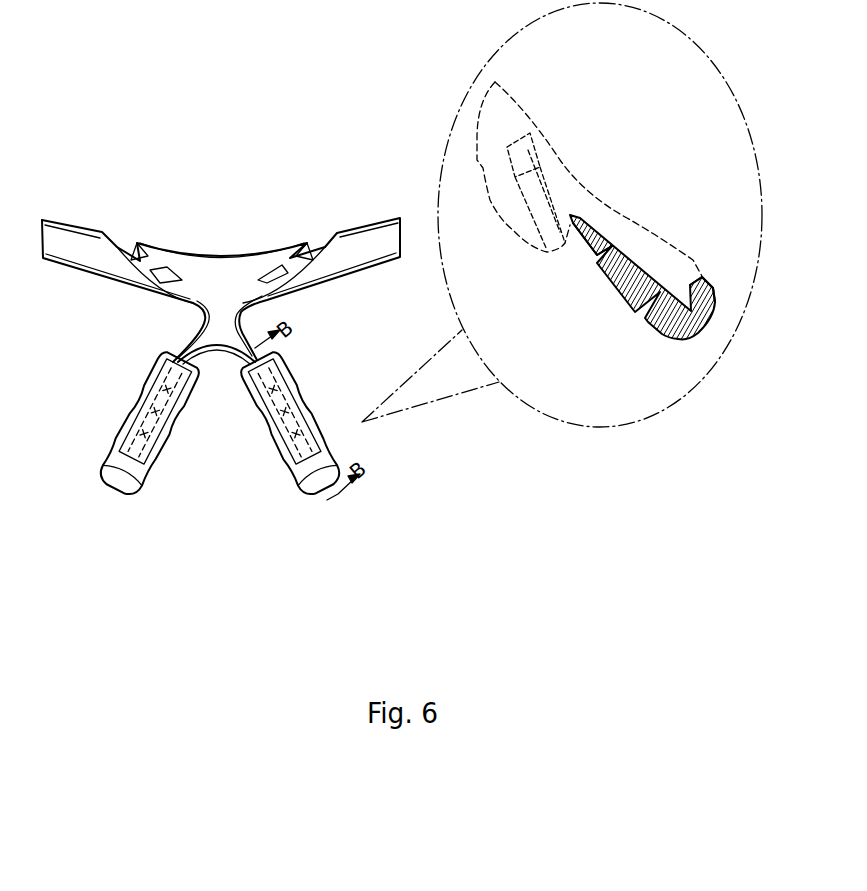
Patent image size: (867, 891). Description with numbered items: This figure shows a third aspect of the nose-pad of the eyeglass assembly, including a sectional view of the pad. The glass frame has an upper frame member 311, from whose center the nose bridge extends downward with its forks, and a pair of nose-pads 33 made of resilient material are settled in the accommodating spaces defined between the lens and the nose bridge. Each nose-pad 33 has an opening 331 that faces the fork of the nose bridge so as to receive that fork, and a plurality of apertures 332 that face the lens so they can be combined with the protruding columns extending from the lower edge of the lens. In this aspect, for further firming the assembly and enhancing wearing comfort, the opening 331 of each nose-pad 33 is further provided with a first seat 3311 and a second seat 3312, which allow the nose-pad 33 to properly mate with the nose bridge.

The upper frame member 311 is at (368, 241).
The opening 331 is at (292, 432).
The nose-pad 33 is at (677, 337).
The aperture 332 is at (603, 248).
The first seat 3311 is at (637, 232).
The second seat 3312 is at (708, 288).